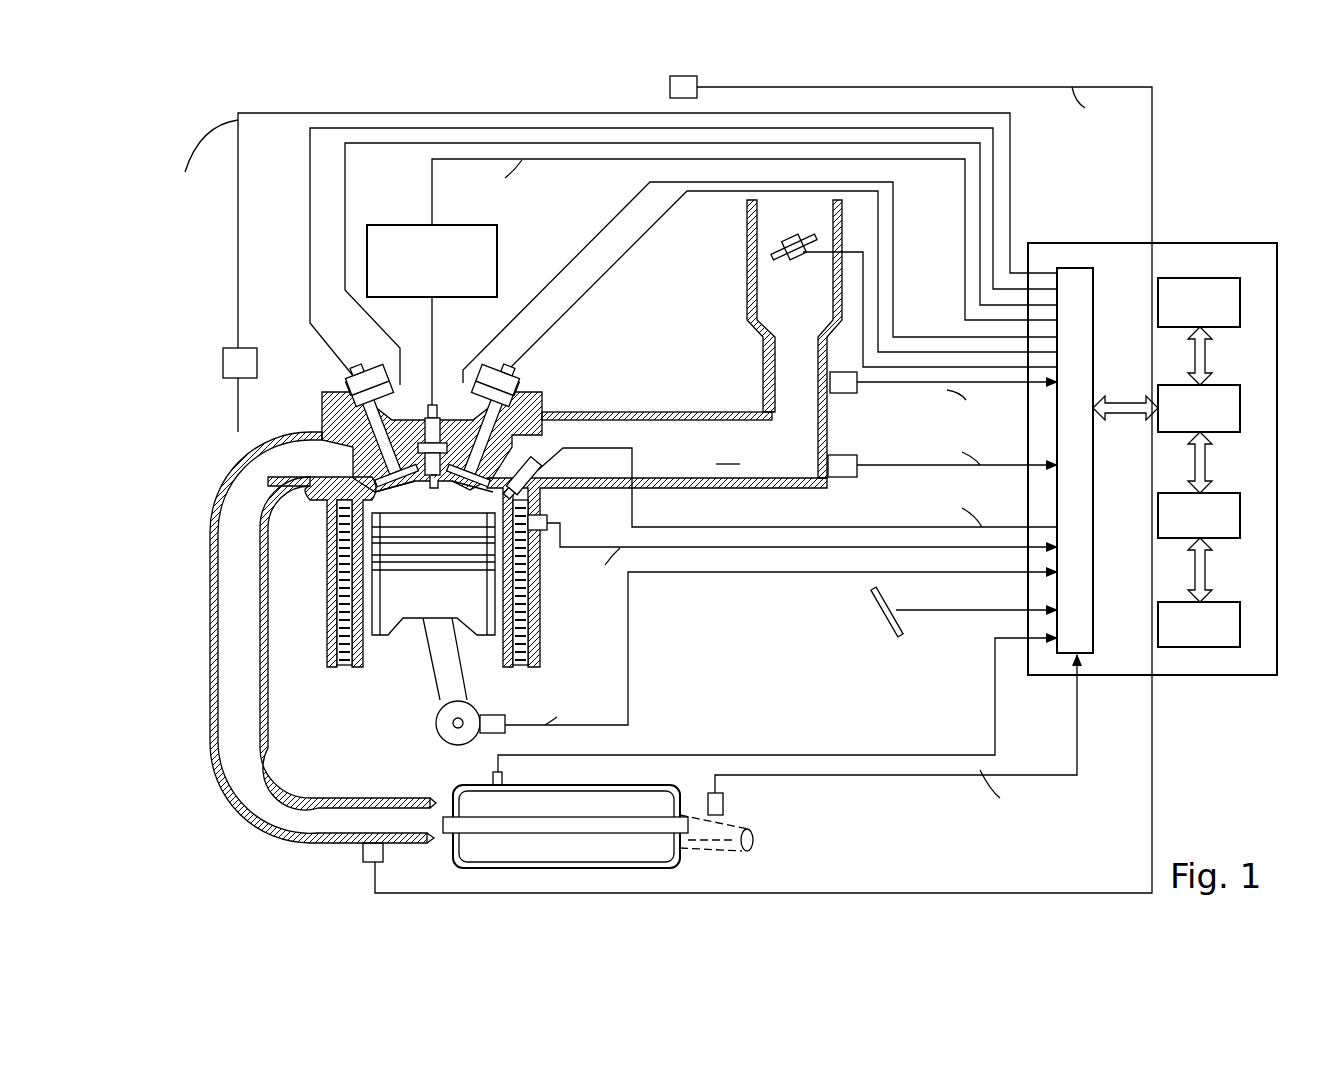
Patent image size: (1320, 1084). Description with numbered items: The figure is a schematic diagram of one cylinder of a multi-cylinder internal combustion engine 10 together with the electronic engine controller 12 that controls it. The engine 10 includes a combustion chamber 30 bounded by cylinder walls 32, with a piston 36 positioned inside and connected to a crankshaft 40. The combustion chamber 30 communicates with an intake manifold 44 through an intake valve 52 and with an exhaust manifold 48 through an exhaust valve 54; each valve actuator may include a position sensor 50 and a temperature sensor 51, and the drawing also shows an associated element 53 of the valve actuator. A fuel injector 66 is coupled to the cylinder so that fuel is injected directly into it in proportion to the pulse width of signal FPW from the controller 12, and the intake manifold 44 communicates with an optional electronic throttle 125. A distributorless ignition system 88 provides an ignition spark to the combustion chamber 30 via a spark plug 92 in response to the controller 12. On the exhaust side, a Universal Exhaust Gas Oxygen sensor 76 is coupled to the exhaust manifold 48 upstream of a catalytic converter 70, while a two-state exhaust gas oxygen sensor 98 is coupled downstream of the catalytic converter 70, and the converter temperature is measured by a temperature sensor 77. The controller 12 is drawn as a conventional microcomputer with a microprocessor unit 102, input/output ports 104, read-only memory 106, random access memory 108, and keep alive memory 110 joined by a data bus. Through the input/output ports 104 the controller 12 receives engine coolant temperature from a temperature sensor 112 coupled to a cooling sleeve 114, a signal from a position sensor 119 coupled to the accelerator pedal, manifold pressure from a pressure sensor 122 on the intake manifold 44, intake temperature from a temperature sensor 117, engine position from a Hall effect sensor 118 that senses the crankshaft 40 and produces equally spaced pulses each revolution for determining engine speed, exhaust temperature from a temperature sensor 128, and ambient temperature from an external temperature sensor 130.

The internal combustion engine 10 is at (325, 388).
The electronic engine controller 12 is at (1236, 243).
The combustion chamber 30 is at (420, 495).
The cylinder walls 32 is at (547, 602).
The piston 36 is at (436, 600).
The crankshaft 40 is at (447, 728).
The intake manifold 44 is at (692, 339).
The exhaust manifold 48 is at (232, 488).
The position sensor 50 is at (384, 380).
The temperature sensor 51 is at (446, 383).
The intake valve 52 is at (487, 470).
The valve position sensor 53 is at (370, 390).
The exhaust valve 54 is at (372, 470).
The fuel injector 66 is at (540, 470).
The catalytic converter 70 is at (515, 868).
The Universal Exhaust Gas Oxygen sensor 76 is at (246, 348).
The temperature sensor 77 is at (492, 780).
The distributorless ignition system 88 is at (456, 225).
The spark plug 92 is at (425, 404).
The two-state exhaust gas oxygen sensor 98 is at (728, 800).
The microprocessor unit 102 is at (1212, 385).
The input/output ports 104 is at (1093, 312).
The read-only memory 106 is at (1212, 278).
The random access memory 108 is at (1212, 493).
The keep alive memory 110 is at (1212, 602).
The temperature sensor 112 is at (547, 515).
The cooling sleeve 114 is at (368, 670).
The temperature sensor 117 is at (860, 393).
The Hall effect sensor 118 is at (494, 715).
The position sensor 119 is at (880, 622).
The pressure sensor 122 is at (845, 478).
The electronic throttle 125 is at (778, 232).
The temperature sensor 128 is at (363, 853).
The external temperature sensor 130 is at (670, 90).